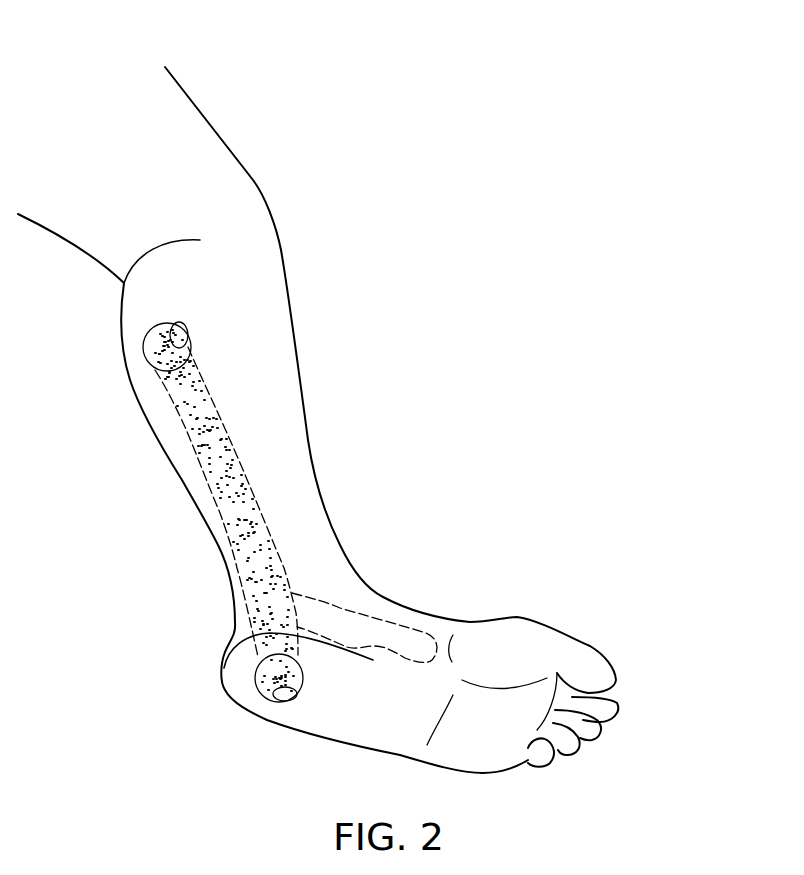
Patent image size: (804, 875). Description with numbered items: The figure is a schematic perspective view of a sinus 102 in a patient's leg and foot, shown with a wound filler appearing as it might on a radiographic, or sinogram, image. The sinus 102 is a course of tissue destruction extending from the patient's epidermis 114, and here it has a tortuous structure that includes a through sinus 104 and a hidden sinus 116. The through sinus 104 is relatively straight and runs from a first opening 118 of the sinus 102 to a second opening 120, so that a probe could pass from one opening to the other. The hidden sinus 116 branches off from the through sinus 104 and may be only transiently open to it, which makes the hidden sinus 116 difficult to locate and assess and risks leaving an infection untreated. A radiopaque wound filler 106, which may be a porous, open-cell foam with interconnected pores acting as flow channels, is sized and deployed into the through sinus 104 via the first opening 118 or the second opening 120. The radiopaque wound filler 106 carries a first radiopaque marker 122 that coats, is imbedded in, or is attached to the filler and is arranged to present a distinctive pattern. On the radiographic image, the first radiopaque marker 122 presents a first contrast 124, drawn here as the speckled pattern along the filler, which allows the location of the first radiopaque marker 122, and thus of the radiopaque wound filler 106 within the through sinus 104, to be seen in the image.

The sinus 102 is at (204, 465).
The through sinus 104 is at (237, 530).
The radiopaque wound filler 106 is at (207, 415).
The epidermis 114 is at (203, 118).
The hidden sinus 116 is at (405, 640).
The first opening 118 is at (165, 323).
The second opening 120 is at (271, 702).
The first radiopaque marker 122 is at (180, 380).
The first contrast 124 is at (198, 428).